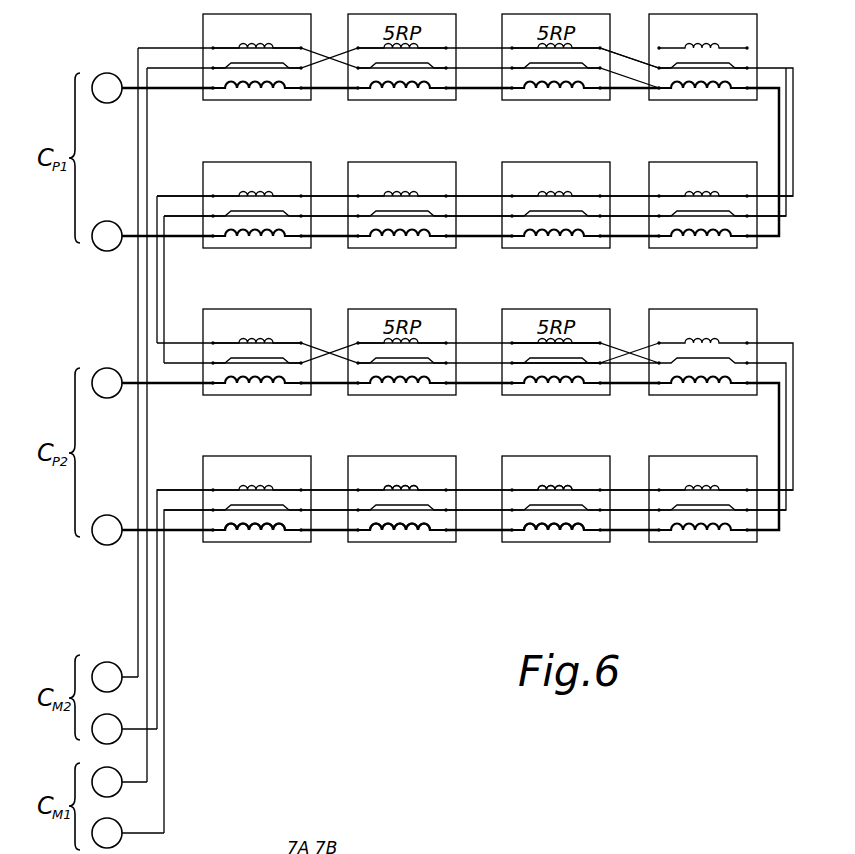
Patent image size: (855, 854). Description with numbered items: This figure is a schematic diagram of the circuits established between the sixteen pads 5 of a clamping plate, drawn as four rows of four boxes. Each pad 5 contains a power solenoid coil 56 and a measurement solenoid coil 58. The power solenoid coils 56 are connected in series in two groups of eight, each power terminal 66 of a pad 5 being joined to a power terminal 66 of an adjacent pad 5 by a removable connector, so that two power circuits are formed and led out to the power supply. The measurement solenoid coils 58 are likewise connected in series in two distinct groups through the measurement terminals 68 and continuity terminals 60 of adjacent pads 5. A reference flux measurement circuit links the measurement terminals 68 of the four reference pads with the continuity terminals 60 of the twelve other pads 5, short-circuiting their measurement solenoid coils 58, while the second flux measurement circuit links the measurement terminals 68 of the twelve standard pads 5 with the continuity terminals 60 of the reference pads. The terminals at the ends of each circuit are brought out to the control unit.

The pad 5 is at (538, 173).
The power solenoid coil 56 is at (556, 531).
The measurement solenoid coil 58 is at (553, 488).
The continuity terminal 60 is at (203, 517).
The power terminal 66 is at (348, 535).
The measurement terminal 68 is at (357, 492).